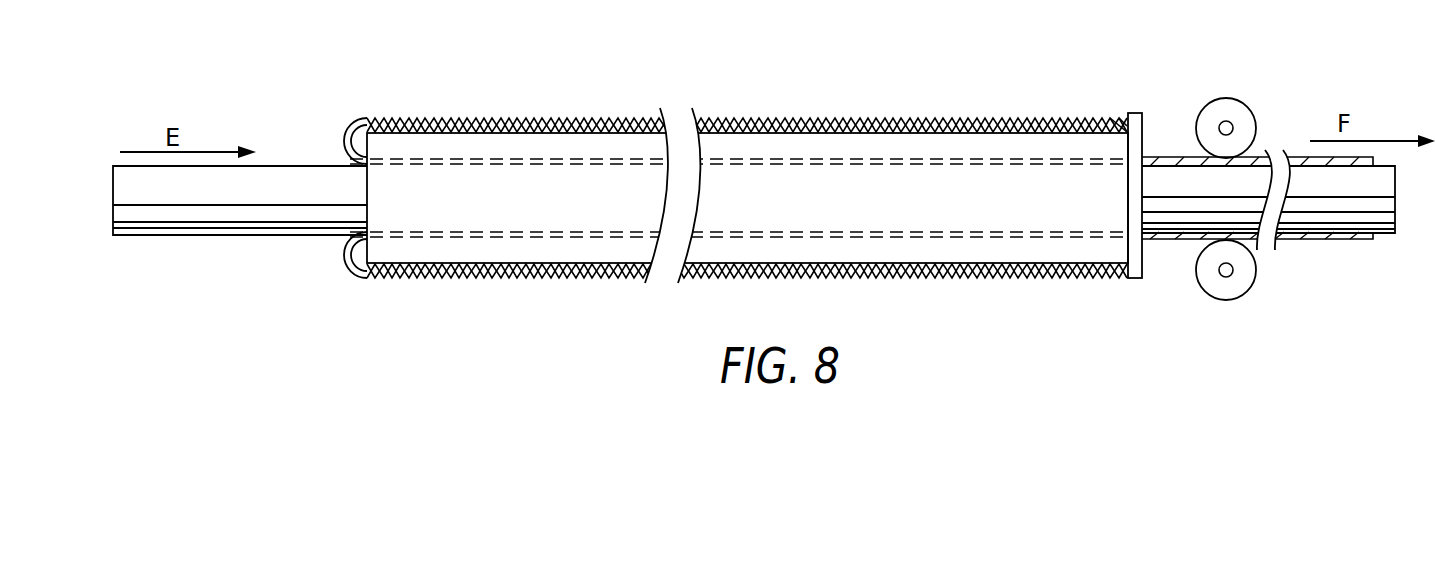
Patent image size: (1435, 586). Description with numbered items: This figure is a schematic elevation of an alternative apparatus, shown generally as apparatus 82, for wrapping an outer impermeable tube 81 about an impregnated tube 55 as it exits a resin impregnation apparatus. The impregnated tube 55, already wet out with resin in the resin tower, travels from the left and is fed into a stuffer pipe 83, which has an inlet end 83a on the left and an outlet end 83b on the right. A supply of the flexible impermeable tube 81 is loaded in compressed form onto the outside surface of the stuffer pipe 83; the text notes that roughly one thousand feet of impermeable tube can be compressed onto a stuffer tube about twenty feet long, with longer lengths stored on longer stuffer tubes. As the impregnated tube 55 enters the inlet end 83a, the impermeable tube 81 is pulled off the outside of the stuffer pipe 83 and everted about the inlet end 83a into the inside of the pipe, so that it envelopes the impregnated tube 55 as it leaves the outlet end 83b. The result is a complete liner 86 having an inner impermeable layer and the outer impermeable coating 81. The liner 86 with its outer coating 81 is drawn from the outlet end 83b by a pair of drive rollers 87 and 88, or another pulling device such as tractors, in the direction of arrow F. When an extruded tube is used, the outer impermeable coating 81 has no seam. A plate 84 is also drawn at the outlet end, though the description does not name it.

The impregnated tube 55 is at (147, 226).
The outer impermeable tube 81 is at (481, 278).
The apparatus for wrapping an outer impermeable tube 82 is at (711, 192).
The stuffer pipe 83 is at (412, 250).
The inlet end 83a is at (367, 255).
The outlet end 83b is at (1153, 118).
The end plate 84 is at (1122, 297).
The complete liner 86 is at (1163, 217).
The drive roller 87 is at (1250, 112).
The drive roller 88 is at (1241, 297).